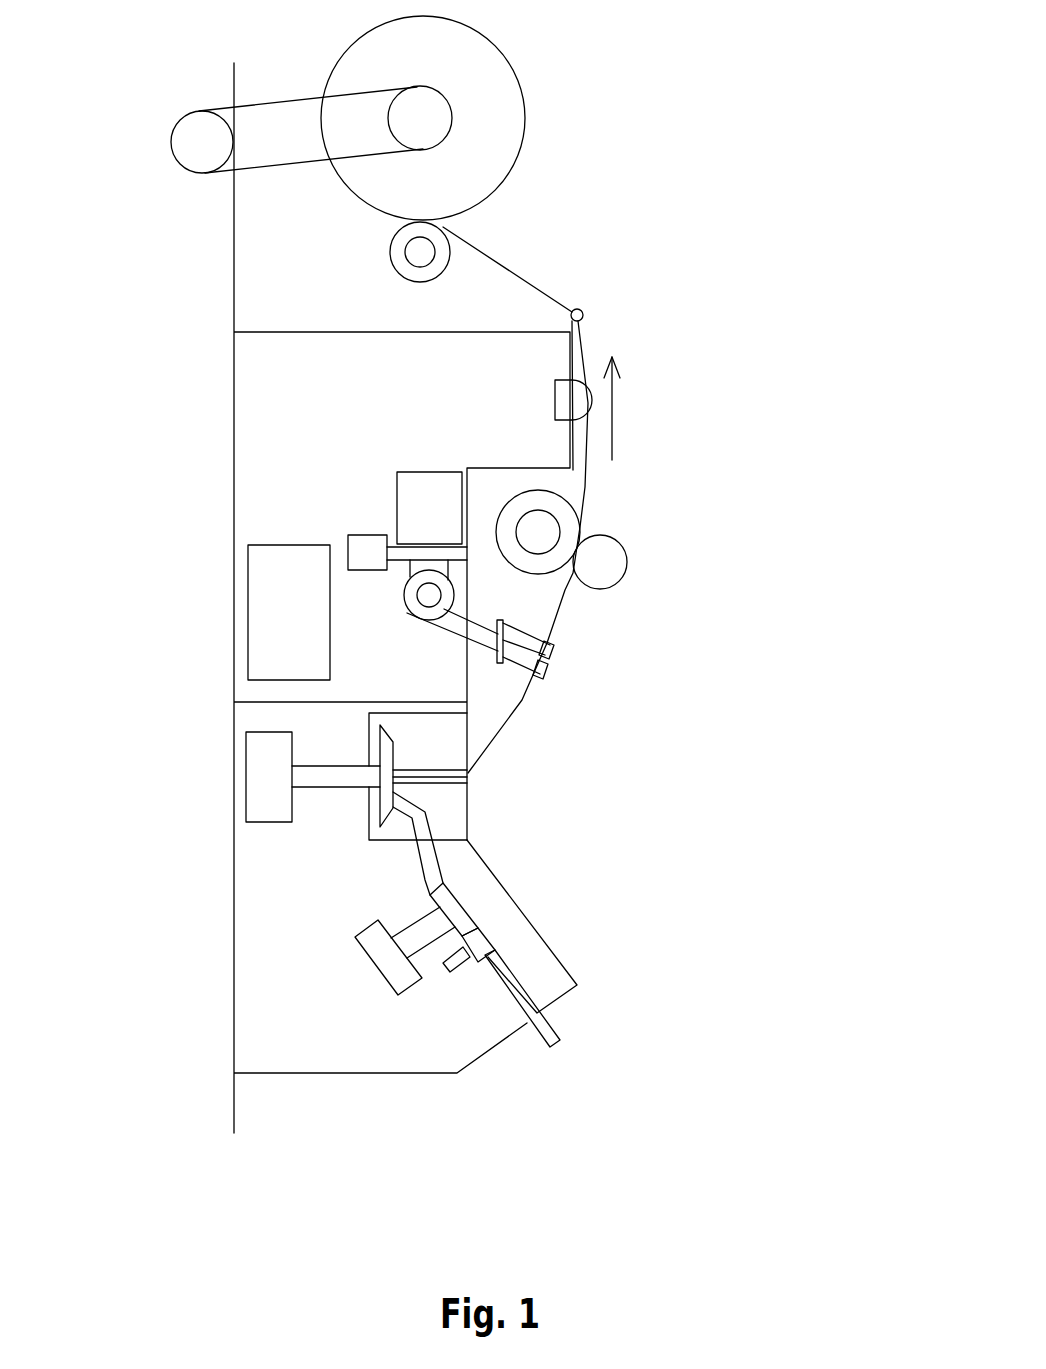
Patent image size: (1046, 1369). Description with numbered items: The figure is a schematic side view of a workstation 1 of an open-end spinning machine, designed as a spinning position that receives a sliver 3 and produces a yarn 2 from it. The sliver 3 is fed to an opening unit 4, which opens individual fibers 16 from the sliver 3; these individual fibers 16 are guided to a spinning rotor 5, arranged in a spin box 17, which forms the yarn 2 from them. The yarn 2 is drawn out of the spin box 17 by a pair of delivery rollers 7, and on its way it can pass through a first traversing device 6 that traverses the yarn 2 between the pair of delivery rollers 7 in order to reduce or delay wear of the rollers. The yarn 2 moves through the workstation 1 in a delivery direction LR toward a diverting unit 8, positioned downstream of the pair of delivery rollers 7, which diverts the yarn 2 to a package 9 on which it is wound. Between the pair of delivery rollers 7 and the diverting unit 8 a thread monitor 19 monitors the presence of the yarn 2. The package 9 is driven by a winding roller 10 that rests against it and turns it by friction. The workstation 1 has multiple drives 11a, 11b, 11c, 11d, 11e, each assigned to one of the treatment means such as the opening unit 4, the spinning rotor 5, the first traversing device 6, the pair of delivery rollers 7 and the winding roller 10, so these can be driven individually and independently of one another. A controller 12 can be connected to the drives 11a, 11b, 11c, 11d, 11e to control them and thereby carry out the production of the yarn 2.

The workstation 1 is at (712, 92).
The yarn 2 is at (632, 547).
The sliver 3 is at (516, 1063).
The opening unit 4 is at (550, 926).
The spinning rotor 5 is at (497, 782).
The first traversing device 6 is at (549, 645).
The pair of delivery rollers 7 is at (684, 562).
The diverting unit 8 is at (579, 274).
The package 9 is at (424, 118).
The winding roller 10 is at (531, 248).
The drive 11a is at (399, 1073).
The drive 11b is at (228, 777).
The drive 11c is at (277, 500).
The drive 11d is at (674, 520).
The drive 11e is at (244, 259).
The controller 12 is at (206, 612).
The individual fibers 16 is at (543, 843).
The spin box 17 is at (495, 776).
The thread monitor 19 is at (350, 385).
The delivery direction LR is at (691, 387).